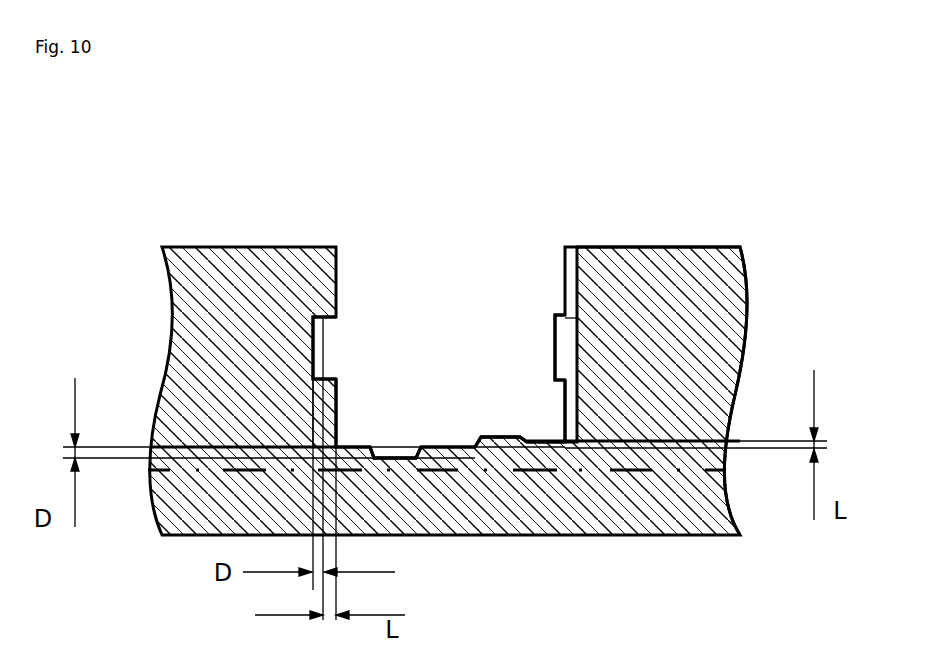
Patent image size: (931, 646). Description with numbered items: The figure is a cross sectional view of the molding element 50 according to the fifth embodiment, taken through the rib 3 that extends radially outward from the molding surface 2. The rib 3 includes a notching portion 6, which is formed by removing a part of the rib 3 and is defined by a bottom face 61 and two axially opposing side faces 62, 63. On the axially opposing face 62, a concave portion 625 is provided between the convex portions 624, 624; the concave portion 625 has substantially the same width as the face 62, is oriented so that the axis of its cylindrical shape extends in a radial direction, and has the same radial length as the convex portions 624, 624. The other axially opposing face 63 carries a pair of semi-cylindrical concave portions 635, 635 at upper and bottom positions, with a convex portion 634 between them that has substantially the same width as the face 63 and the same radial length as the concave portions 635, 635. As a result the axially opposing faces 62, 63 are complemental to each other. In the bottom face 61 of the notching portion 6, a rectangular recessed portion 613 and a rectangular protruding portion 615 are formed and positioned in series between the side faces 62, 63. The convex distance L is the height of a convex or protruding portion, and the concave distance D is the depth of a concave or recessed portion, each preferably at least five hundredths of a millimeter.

The molding element 50 is at (177, 216).
The notching portion 6 is at (450, 251).
The bottom face 61 is at (438, 446).
The rectangular recessed portion 613 is at (383, 446).
The rectangular protruding portion 615 is at (495, 437).
The axially opposing side face 62 is at (327, 340).
The convex portion 624 is at (336, 270).
The concave portion 625 is at (327, 362).
The axially opposing side face 63 is at (564, 283).
The convex portion 634 is at (575, 425).
The concave portion 635 is at (548, 345).
The rib 3 is at (668, 260).
The molding surface 2 is at (712, 458).